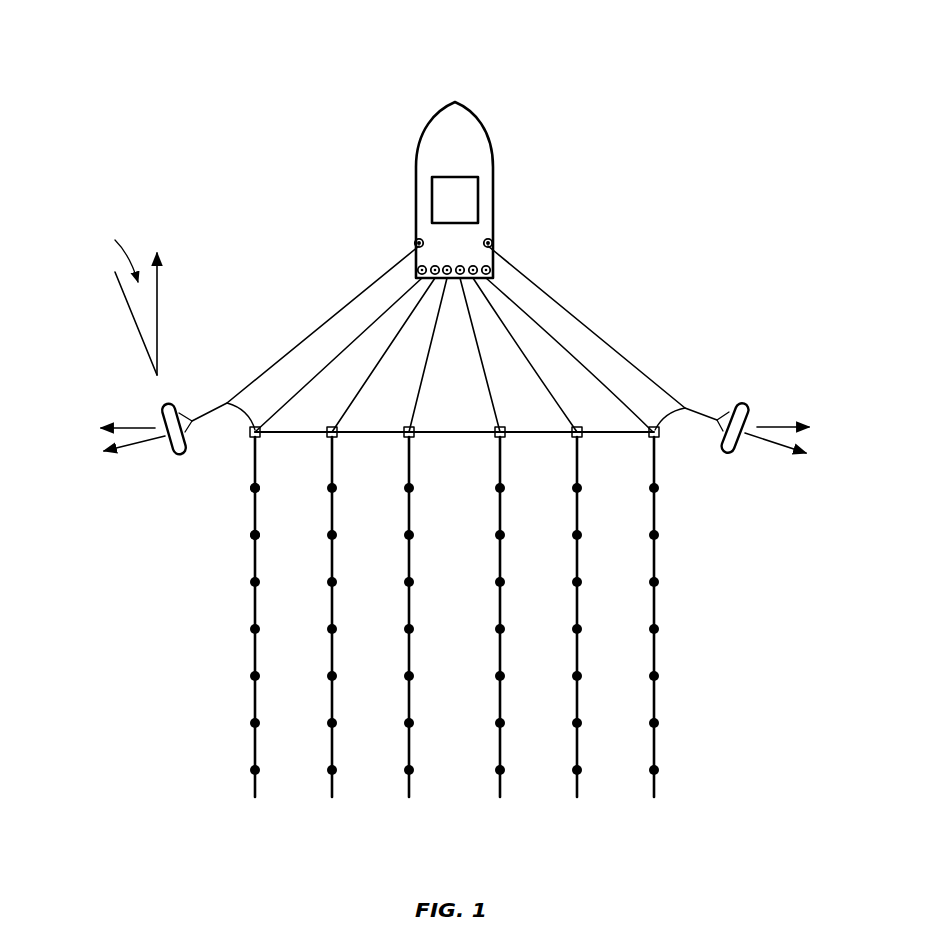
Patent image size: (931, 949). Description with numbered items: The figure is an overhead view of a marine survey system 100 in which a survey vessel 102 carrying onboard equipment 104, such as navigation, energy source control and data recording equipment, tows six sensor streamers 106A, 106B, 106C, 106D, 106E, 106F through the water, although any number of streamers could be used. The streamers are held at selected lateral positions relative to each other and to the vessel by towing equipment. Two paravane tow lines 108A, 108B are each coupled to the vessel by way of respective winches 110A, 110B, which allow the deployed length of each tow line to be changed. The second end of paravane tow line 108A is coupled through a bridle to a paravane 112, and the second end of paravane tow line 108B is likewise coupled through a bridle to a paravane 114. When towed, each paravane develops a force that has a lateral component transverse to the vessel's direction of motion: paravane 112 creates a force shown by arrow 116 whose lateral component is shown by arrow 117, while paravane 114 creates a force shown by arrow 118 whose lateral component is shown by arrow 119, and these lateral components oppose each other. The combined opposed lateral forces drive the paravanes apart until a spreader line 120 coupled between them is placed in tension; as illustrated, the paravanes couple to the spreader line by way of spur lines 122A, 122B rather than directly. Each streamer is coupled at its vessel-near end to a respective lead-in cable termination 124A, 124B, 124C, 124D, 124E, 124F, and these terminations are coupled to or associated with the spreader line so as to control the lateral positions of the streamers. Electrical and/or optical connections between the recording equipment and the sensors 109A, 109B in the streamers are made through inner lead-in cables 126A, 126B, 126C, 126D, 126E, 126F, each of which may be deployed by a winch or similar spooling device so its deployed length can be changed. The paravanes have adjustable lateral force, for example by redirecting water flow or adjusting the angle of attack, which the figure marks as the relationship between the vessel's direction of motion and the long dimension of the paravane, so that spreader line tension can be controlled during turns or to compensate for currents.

The marine survey system 100 is at (284, 62).
The survey vessel 102 is at (485, 132).
The onboard equipment 104 is at (467, 193).
The sensor streamer 106A is at (255, 797).
The sensor streamer 106B is at (332, 796).
The sensor streamer 106C is at (409, 796).
The sensor streamer 106D is at (500, 796).
The sensor streamer 106E is at (577, 796).
The sensor streamer 106F is at (654, 796).
The paravane tow line 108A is at (397, 262).
The paravane tow line 108B is at (583, 328).
The sensor 109A is at (253, 490).
The sensor 109B is at (253, 537).
The winch 110A is at (416, 240).
The winch 110B is at (490, 240).
The paravane 112 is at (177, 454).
The paravane 114 is at (745, 403).
The force arrow 116 is at (118, 440).
The lateral force component arrow 117 is at (118, 425).
The force arrow 118 is at (777, 447).
The lateral force component arrow 119 is at (773, 427).
The spreader line 120 is at (430, 432).
The spur line 122A is at (233, 440).
The spur line 122B is at (672, 423).
The lead-in cable termination 124A is at (258, 440).
The lead-in cable termination 124B is at (336, 440).
The lead-in cable termination 124C is at (413, 438).
The lead-in cable termination 124D is at (503, 438).
The lead-in cable termination 124E is at (580, 438).
The lead-in cable termination 124F is at (660, 438).
The inner lead-in cable 126A is at (387, 310).
The inner lead-in cable 126B is at (402, 340).
The inner lead-in cable 126C is at (422, 373).
The inner lead-in cable 126D is at (500, 326).
The inner lead-in cable 126E is at (510, 332).
The inner lead-in cable 126F is at (575, 367).